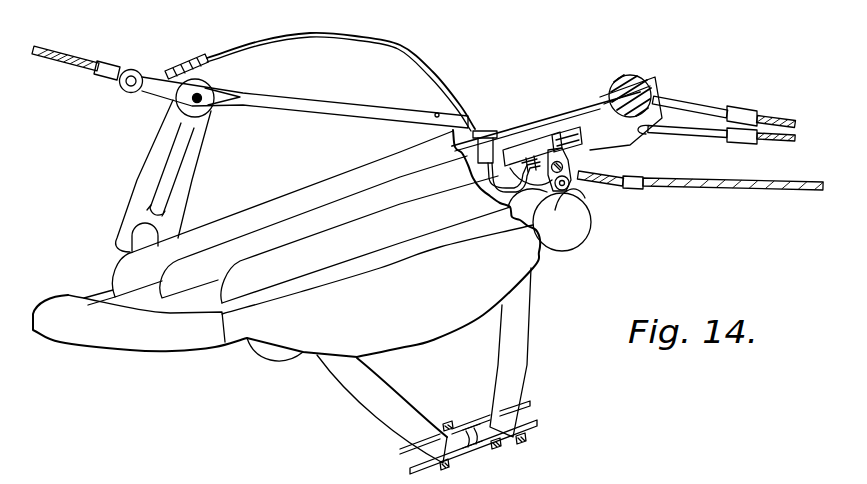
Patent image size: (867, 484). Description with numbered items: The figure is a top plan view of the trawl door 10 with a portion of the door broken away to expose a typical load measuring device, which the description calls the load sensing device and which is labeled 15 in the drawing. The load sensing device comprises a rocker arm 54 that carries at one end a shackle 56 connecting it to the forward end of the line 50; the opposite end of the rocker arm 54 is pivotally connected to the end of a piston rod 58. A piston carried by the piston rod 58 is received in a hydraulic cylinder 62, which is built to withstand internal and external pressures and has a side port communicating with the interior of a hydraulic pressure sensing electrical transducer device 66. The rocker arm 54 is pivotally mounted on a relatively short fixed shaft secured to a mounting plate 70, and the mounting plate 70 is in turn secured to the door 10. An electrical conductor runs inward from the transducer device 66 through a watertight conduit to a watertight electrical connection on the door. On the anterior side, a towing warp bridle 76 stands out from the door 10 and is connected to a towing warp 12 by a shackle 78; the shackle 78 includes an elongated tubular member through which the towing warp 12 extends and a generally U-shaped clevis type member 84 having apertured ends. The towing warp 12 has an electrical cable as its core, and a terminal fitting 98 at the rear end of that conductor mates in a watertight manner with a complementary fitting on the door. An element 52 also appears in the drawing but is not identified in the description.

The trawl door 10 is at (167, 313).
The towing warp 12 is at (54, 52).
The load sensing device 15 is at (564, 118).
The line 50 is at (748, 189).
The cables 52 is at (778, 118).
The rocker arm 54 is at (560, 247).
The shackle 56 is at (583, 191).
The piston rod 58 is at (560, 133).
The hydraulic cylinder 62 is at (598, 95).
The hydraulic pressure sensing electrical transducer device 66 is at (648, 163).
The mounting plate 70 is at (523, 148).
The towing warp bridle 76 is at (128, 150).
The shackle 78 is at (108, 106).
The U-shaped clevis type member 84 is at (212, 115).
The terminal fitting 98 is at (477, 128).